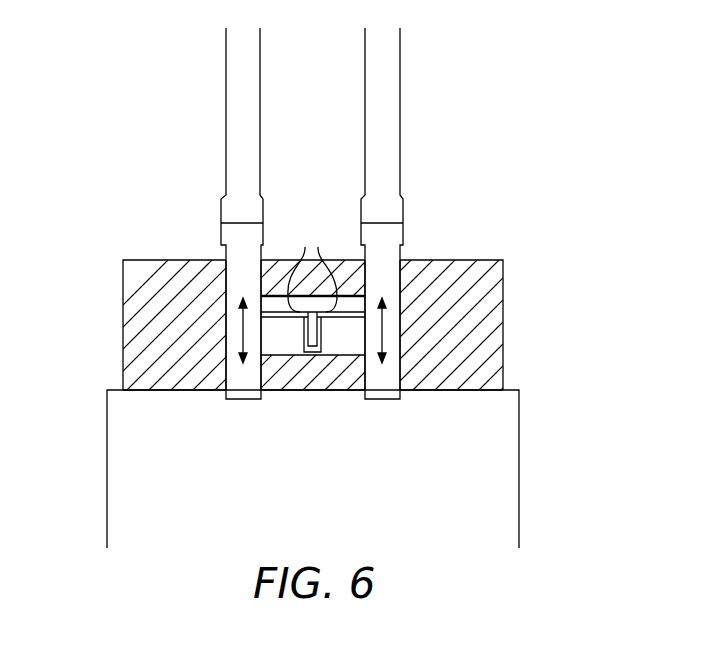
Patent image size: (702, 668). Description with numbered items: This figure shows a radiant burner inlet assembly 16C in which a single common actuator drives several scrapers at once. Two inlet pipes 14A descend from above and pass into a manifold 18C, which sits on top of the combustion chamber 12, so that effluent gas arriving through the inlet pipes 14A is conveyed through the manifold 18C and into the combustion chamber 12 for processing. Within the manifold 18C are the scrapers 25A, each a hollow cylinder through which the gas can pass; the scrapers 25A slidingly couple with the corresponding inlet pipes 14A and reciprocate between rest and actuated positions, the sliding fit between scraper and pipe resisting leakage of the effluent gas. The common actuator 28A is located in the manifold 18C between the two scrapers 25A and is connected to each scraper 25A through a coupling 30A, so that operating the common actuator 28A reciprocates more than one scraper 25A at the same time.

The combustion chamber 12 is at (326, 527).
The inlet pipes 14A is at (226, 60).
The radiant burner inlet assembly 16C is at (119, 191).
The manifold 18C is at (500, 275).
The scrapers 25A is at (222, 258).
The common actuator 28A is at (312, 352).
The coupling 30A is at (312, 268).